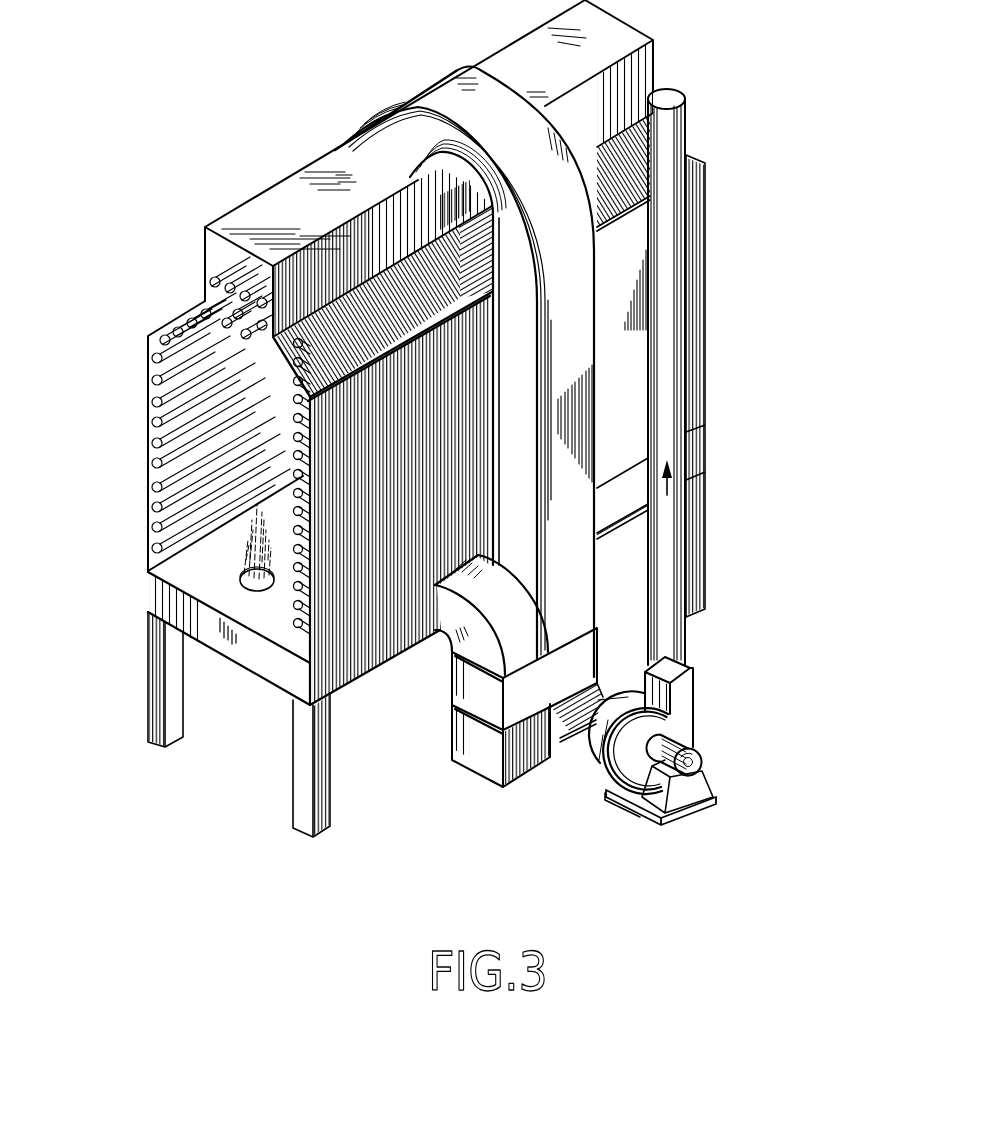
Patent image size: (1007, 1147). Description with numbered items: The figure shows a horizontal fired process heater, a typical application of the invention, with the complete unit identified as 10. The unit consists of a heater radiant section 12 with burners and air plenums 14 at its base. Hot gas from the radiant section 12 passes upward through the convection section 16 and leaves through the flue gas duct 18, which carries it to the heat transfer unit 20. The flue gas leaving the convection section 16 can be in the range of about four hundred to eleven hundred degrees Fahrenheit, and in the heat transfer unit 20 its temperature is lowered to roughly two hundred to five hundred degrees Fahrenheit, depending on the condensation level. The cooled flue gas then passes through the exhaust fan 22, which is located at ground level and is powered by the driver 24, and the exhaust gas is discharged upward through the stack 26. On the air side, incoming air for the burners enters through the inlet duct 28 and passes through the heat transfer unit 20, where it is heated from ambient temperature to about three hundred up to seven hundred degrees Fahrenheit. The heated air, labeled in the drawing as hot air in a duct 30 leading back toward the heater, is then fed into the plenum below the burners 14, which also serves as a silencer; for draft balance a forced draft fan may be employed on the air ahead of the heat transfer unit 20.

The complete unit 10 is at (181, 103).
The heater radiant section 12 is at (161, 432).
The burners and air plenums 14 is at (258, 652).
The convection section 16 is at (221, 262).
The flue gas duct 18 is at (578, 228).
The heat transfer unit 20 is at (469, 690).
The exhaust fan 22 is at (684, 710).
The driver 24 is at (699, 767).
The stack 26 is at (669, 633).
The inlet duct 28 is at (457, 765).
The hot air duct 30 is at (470, 496).